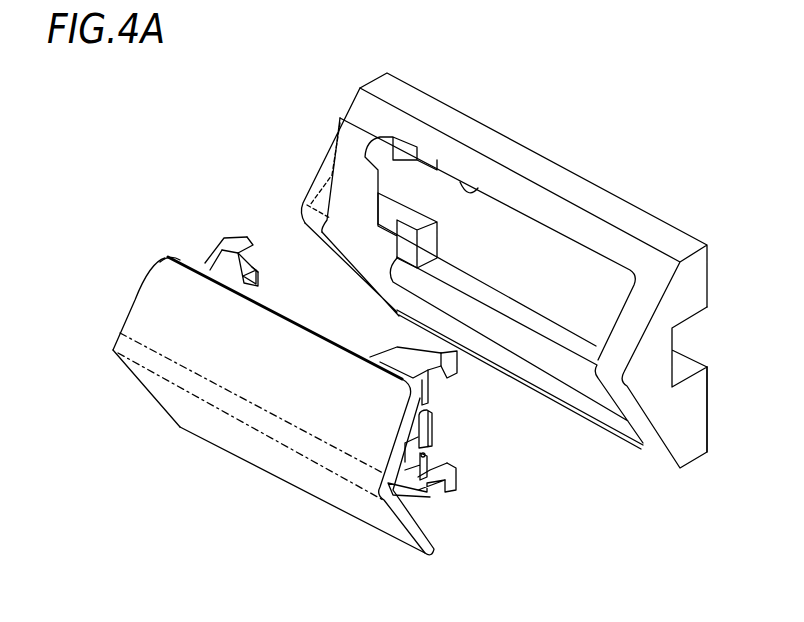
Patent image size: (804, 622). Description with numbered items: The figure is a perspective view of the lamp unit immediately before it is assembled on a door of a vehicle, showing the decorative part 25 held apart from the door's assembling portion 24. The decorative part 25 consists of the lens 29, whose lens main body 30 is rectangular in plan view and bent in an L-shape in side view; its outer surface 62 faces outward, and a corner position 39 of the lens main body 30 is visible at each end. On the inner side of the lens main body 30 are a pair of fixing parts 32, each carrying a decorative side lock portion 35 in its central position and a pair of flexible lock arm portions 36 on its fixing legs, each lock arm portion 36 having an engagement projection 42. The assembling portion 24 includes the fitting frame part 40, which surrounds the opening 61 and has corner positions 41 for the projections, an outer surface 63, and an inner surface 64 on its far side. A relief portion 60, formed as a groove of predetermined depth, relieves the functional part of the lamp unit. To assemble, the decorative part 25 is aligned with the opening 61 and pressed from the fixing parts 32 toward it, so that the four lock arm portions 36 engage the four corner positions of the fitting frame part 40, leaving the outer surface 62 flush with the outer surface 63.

The assembling portion 24 is at (590, 178).
The decorative part 25 is at (265, 450).
The lens 29 is at (168, 400).
The lens main body 30 is at (328, 500).
The fixing parts 32 is at (220, 268).
The decorative side lock portion 35 is at (433, 435).
The lock arm portions 36 is at (243, 238).
The corner position 39 is at (165, 257).
The fitting frame part 40 is at (585, 345).
The corner position 41 is at (432, 256).
The engagement projection 42 is at (229, 238).
The relief portion 60 is at (328, 178).
The opening 61 is at (470, 190).
The outer surface 62 is at (143, 312).
The outer surface 63 is at (327, 158).
The inner surface 64 is at (690, 412).